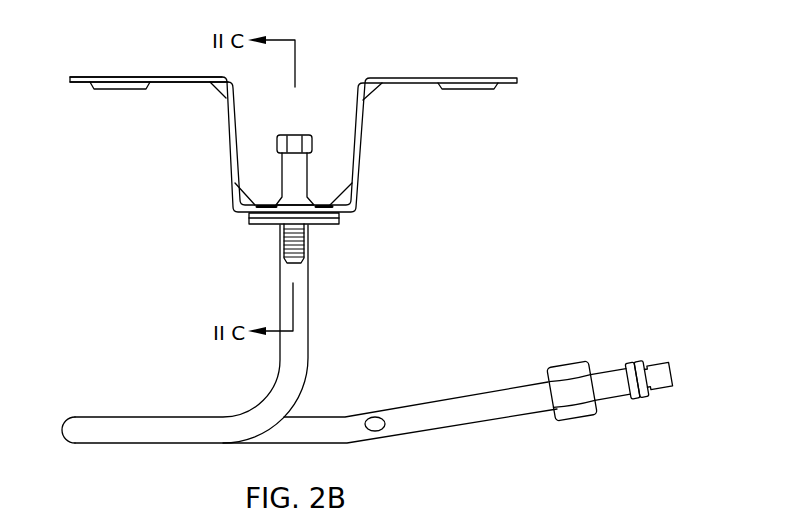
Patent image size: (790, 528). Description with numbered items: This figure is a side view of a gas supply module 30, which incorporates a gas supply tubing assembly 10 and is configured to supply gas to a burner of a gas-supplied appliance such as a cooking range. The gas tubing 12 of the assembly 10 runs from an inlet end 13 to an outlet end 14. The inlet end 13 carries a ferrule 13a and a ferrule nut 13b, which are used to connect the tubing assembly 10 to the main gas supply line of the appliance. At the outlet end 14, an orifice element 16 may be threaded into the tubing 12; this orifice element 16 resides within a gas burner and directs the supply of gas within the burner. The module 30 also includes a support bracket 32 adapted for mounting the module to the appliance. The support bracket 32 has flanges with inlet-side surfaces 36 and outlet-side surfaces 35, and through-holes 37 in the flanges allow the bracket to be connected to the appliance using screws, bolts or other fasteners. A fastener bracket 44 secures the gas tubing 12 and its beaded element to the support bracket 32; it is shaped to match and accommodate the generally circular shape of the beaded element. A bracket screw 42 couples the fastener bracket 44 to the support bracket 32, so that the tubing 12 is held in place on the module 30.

The gas supply tubing assembly 10 is at (386, 334).
The gas tubing 12 is at (95, 416).
The inlet end 13 is at (679, 352).
The ferrule 13a is at (656, 344).
The ferrule nut 13b is at (588, 360).
The outlet end 14 is at (298, 177).
The orifice element 16 is at (300, 134).
The gas supply module 30 is at (335, 117).
The support bracket 32 is at (106, 72).
The outlet-side surface 35 is at (165, 76).
The inlet-side surface 36 is at (82, 86).
The through-hole 37 is at (468, 90).
The bracket screw 42 is at (288, 243).
The fastener bracket 44 is at (338, 226).